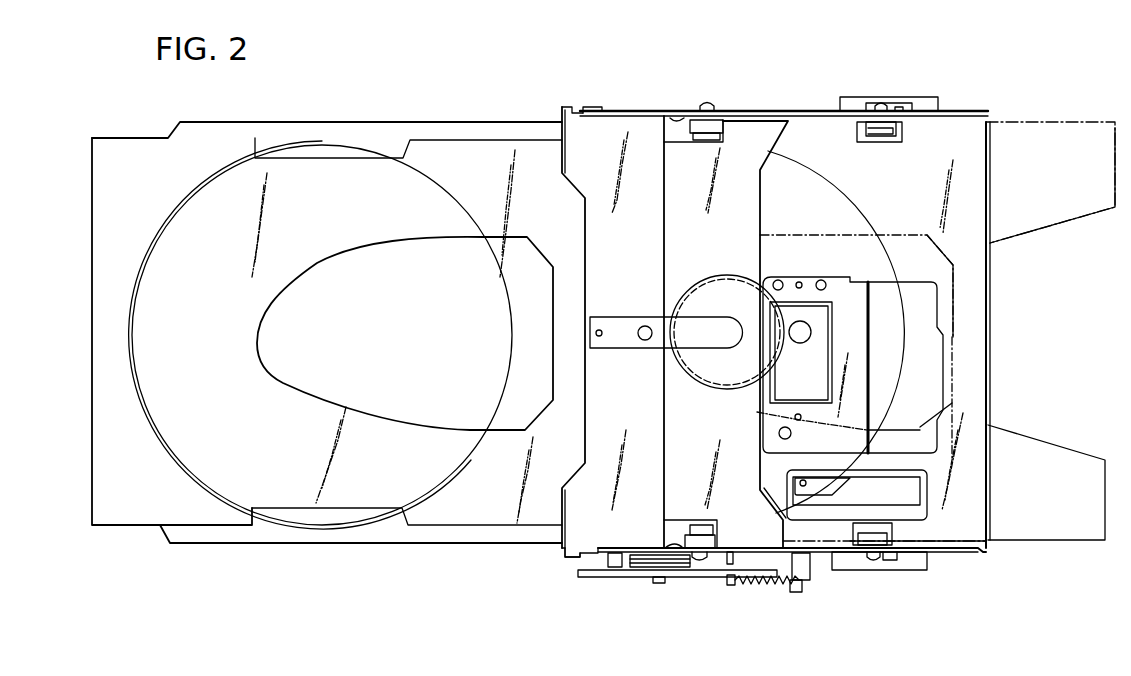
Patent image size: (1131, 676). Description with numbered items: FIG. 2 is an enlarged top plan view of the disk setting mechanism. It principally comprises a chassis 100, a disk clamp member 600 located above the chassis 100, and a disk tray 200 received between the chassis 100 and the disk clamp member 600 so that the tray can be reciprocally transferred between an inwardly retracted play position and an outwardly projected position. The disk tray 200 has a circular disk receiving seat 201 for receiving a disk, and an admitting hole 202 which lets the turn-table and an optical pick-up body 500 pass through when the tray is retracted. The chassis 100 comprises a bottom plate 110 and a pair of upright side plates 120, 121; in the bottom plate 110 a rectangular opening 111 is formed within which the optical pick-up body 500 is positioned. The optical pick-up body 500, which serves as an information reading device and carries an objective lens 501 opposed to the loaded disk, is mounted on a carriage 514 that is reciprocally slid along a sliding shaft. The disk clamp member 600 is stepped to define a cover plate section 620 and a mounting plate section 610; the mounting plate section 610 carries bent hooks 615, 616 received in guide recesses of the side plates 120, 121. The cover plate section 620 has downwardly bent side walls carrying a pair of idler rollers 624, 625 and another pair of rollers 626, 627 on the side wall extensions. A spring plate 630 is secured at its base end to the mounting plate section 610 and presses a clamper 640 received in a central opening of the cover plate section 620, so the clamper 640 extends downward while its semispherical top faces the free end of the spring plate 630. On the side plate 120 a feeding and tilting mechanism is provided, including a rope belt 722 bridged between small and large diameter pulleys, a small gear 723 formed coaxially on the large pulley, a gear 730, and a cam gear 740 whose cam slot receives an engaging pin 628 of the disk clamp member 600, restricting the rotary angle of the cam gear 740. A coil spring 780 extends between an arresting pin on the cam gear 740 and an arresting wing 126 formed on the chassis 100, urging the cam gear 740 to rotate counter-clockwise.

The chassis 100 is at (988, 328).
The bottom plate 110 is at (974, 297).
The rectangular opening 111 is at (928, 419).
The upright side plate 120 is at (948, 556).
The upright side plate 121 is at (817, 110).
The arresting wing 126 is at (805, 563).
The disk tray 200 is at (160, 502).
The circular disk receiving seat 201 is at (240, 422).
The admitting hole 202 is at (412, 362).
The optical pick-up body 500 is at (832, 357).
The objective lens 501 is at (805, 332).
The carriage 514 is at (855, 390).
The disk clamp member 600 is at (728, 182).
The mounting plate section 610 is at (585, 220).
The bent hook 615 is at (590, 556).
The bent hook 616 is at (594, 107).
The cover plate section 620 is at (750, 200).
The idler roller 624 is at (698, 537).
The idler roller 625 is at (688, 121).
The roller 626 is at (892, 538).
The roller 627 is at (902, 128).
The engaging pin 628 is at (729, 556).
The spring plate 630 is at (618, 322).
The clamper 640 is at (716, 275).
The rope belt 722 is at (645, 560).
The small gear 723 is at (660, 583).
The gear 730 is at (590, 578).
The cam gear 740 is at (710, 578).
The coil spring 780 is at (768, 586).